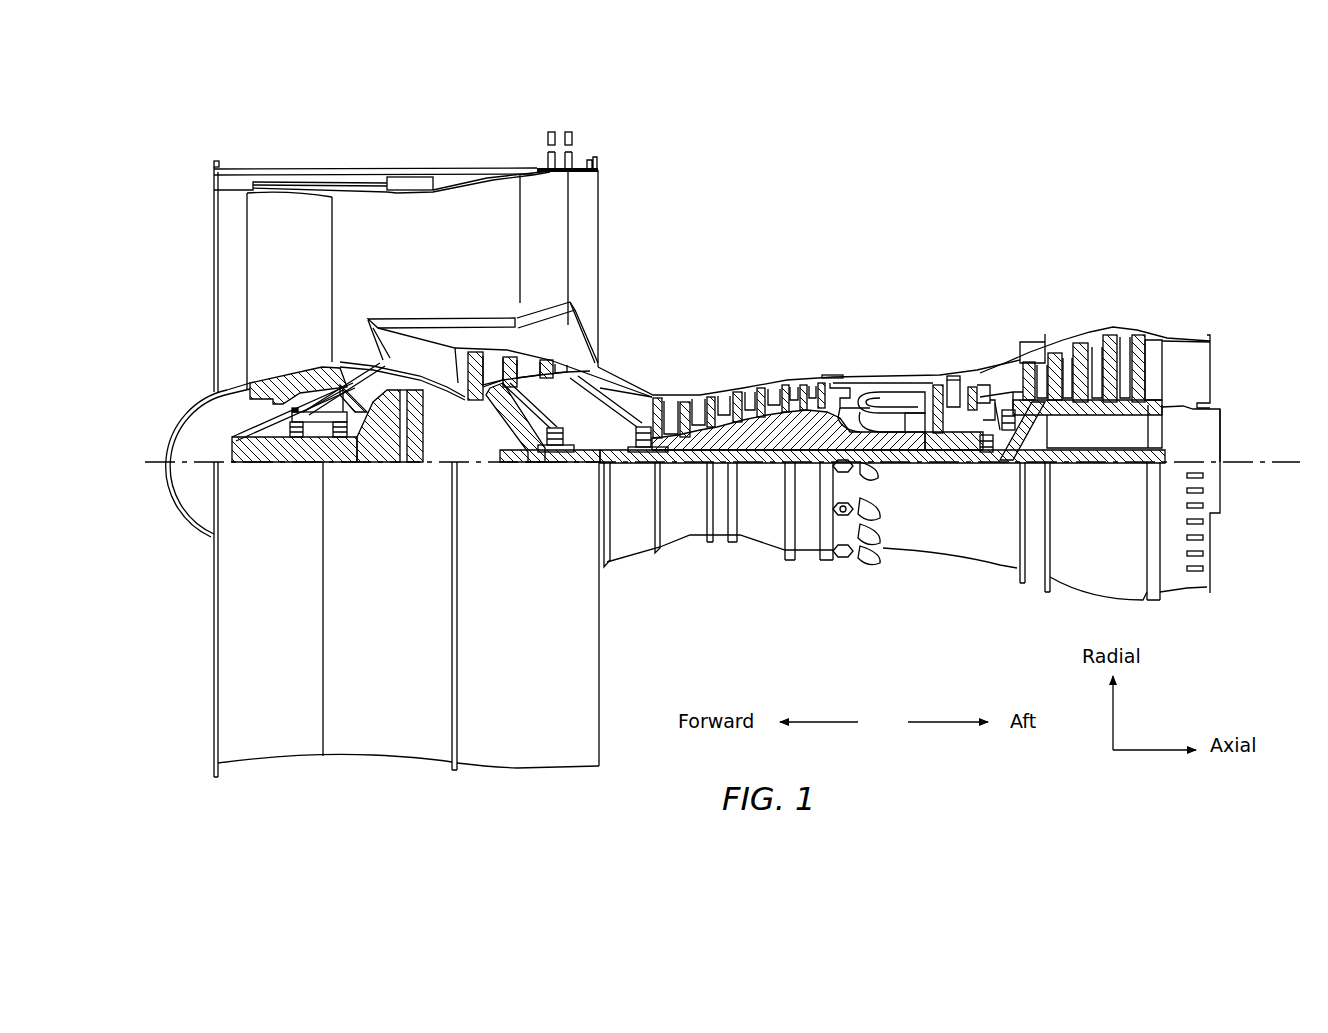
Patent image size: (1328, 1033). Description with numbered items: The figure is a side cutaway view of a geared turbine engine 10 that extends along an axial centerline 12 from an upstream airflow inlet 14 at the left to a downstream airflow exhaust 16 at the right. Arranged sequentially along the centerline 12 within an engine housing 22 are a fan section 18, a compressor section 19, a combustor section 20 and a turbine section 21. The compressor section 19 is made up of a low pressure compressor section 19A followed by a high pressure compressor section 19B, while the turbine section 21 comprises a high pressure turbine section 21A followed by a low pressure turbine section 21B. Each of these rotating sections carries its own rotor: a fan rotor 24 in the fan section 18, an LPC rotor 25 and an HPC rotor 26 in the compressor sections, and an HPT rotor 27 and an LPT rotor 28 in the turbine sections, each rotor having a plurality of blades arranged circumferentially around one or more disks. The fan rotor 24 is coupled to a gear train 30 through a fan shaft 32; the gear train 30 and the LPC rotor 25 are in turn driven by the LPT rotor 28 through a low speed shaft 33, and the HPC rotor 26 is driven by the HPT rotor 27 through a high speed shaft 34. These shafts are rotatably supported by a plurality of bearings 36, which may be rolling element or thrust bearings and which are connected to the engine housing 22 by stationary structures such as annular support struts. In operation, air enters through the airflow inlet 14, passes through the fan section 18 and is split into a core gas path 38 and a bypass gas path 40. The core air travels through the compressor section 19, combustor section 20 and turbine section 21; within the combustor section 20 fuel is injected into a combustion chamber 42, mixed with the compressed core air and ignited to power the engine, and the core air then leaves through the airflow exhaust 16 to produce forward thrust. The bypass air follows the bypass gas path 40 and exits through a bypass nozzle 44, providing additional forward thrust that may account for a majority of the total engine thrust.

The geared turbine engine 10 is at (183, 148).
The axial centerline 12 is at (1267, 470).
The upstream airflow inlet 14 is at (214, 235).
The downstream airflow exhaust 16 is at (1208, 367).
The fan section 18 is at (375, 145).
The compressor section 19 is at (808, 90).
The low pressure compressor (LPC) section 19A is at (600, 134).
The high pressure compressor (HPC) section 19B is at (808, 311).
The combustor section 20 is at (925, 311).
The turbine section 21 is at (1173, 246).
The high pressure turbine (HPT) section 21A is at (1000, 310).
The low pressure turbine (LPT) section 21B is at (1173, 310).
The engine housing 22 is at (620, 572).
The fan rotor 24 is at (250, 389).
The LPC rotor 25 is at (510, 420).
The HPC rotor 26 is at (757, 427).
The HPT rotor 27 is at (952, 440).
The LPT rotor 28 is at (1092, 410).
The gear train 30 is at (405, 467).
The fan shaft 32 is at (278, 465).
The low speed shaft 33 is at (812, 463).
The high speed shaft 34 is at (893, 450).
The bearings 36 is at (313, 433).
The core gas path 38 is at (617, 390).
The bypass gas path 40 is at (458, 250).
The combustion chamber 42 is at (884, 400).
The bypass nozzle 44 is at (598, 222).